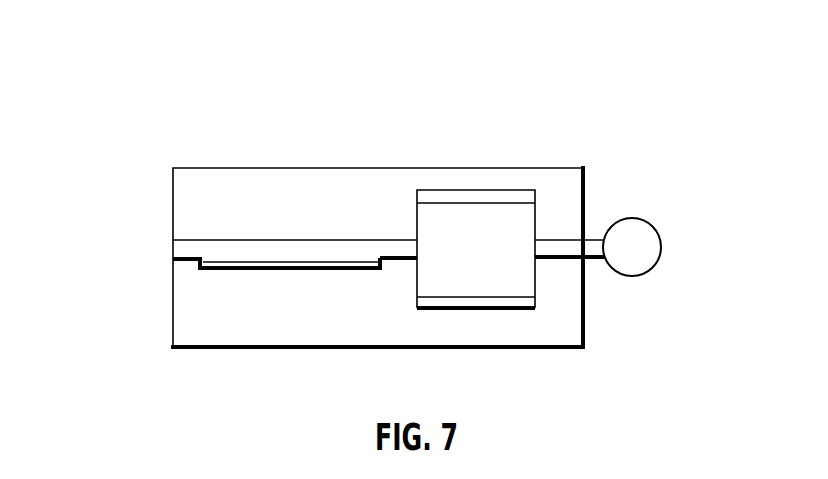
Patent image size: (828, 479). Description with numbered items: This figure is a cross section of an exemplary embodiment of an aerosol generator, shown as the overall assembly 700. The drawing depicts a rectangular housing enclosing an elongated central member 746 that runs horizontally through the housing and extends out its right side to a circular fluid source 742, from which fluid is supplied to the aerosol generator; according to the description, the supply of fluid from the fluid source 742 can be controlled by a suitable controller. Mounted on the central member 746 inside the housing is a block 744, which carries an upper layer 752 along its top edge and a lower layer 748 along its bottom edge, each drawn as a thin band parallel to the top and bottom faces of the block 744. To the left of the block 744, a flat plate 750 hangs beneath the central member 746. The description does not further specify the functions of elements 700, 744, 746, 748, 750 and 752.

The sensor assembly 700 is at (308, 142).
The fluid source 742 is at (643, 220).
The block 744 is at (492, 265).
The shaft 746 is at (183, 249).
The lower layer 748 is at (520, 308).
The plate 750 is at (312, 270).
The upper layer 752 is at (417, 203).